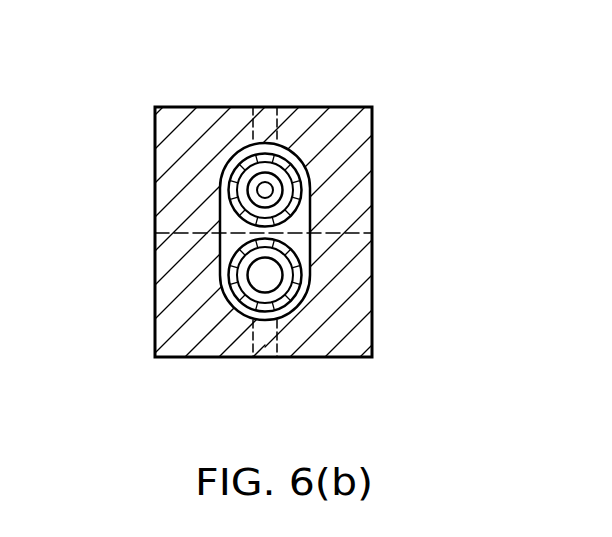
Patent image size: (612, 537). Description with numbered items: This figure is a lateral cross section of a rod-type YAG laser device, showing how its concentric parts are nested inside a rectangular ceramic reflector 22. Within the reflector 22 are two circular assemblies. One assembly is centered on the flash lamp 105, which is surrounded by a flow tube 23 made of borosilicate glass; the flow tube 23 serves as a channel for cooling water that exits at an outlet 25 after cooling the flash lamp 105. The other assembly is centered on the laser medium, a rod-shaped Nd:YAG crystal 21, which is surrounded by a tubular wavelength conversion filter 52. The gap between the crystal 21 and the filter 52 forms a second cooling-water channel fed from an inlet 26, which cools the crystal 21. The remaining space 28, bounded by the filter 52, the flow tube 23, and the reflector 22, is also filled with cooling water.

The reflector 22 is at (358, 272).
The flow tube 23 is at (300, 187).
The space 28 is at (302, 220).
The outlet 25 is at (267, 117).
The inlet 26 is at (267, 350).
The flash lamp 105 is at (265, 190).
The tubular wavelength conversion filter 52 is at (233, 268).
The rod-shaped Nd:YAG crystal 21 is at (262, 277).